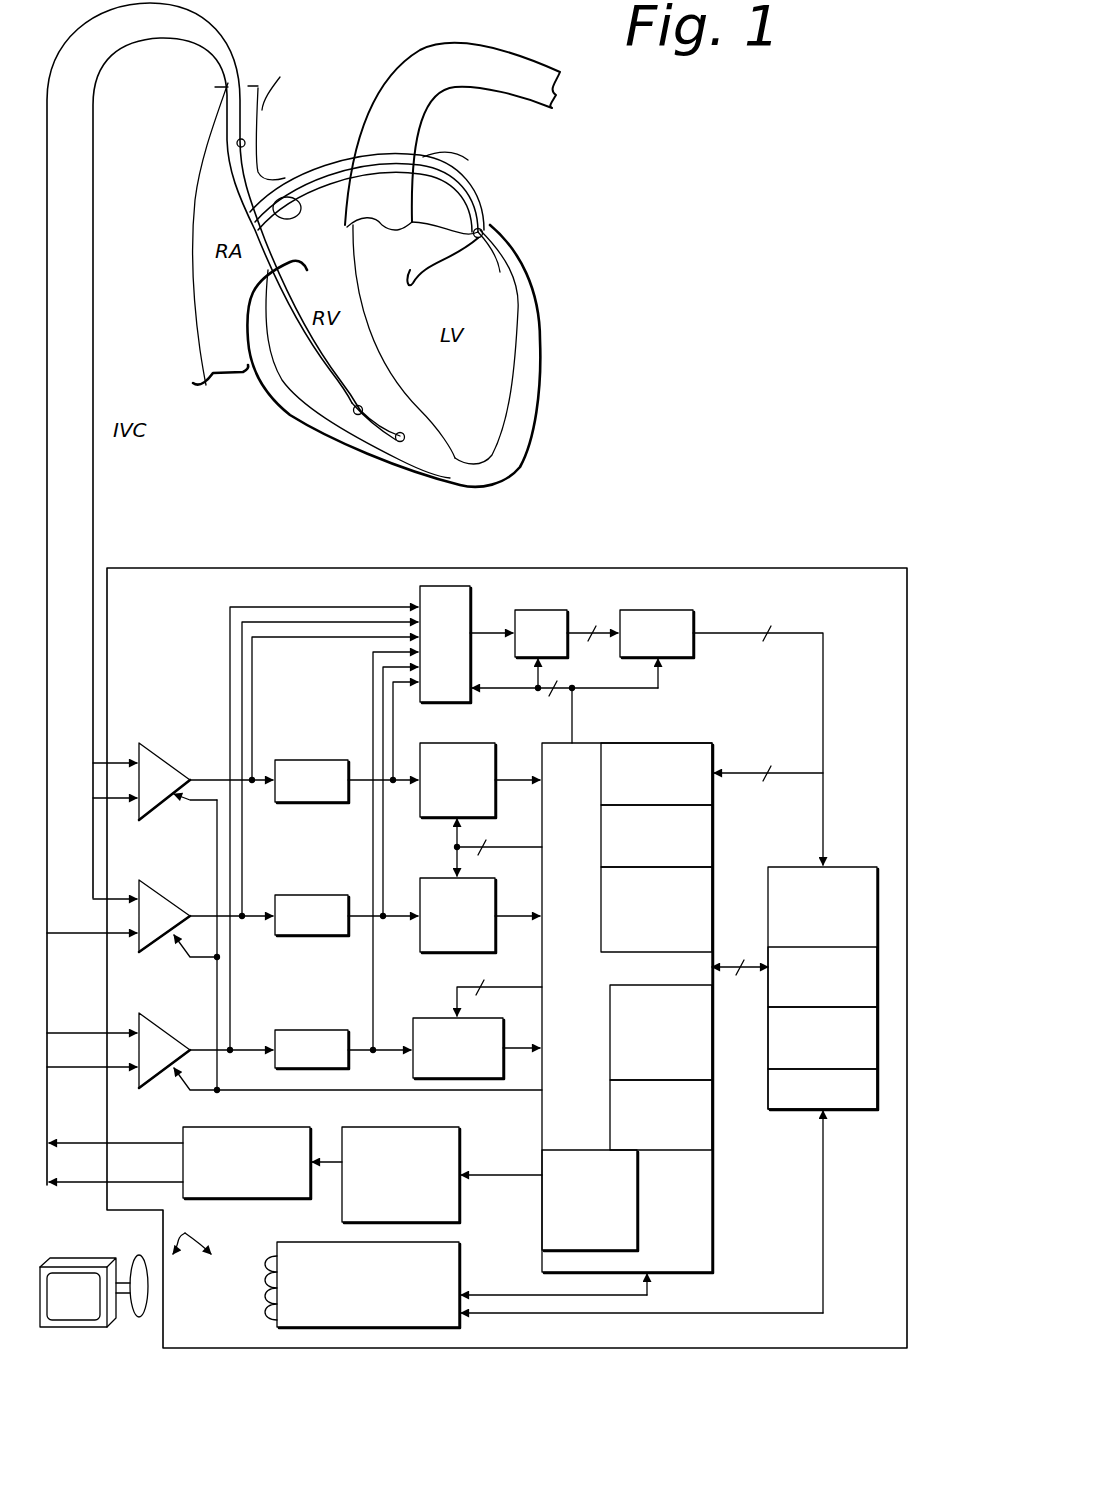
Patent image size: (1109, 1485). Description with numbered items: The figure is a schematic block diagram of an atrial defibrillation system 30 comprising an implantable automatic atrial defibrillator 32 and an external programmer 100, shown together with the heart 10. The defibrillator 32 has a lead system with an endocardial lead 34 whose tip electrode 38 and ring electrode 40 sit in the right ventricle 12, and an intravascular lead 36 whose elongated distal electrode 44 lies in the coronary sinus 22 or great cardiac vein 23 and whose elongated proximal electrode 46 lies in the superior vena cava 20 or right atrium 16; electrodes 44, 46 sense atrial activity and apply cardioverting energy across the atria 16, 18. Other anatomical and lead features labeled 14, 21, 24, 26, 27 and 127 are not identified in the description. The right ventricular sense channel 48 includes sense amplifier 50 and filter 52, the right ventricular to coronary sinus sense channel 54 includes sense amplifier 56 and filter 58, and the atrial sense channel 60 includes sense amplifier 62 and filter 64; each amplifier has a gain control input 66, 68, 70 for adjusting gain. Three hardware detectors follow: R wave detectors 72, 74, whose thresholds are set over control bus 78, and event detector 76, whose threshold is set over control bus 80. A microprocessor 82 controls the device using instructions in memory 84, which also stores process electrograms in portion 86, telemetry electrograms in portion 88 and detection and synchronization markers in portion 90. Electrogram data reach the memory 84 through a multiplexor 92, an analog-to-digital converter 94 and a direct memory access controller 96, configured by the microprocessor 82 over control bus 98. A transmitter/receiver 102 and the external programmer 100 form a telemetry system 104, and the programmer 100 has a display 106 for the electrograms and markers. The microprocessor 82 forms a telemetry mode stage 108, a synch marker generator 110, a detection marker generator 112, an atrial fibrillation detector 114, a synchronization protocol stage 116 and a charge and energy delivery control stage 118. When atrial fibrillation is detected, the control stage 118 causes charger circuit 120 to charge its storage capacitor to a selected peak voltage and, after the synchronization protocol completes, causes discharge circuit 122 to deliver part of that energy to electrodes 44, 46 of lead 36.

The heart 10 is at (796, 128).
The right ventricle 12 is at (302, 350).
The left ventricle wall 14 is at (485, 428).
The right atrium 16 is at (218, 200).
The left atrium 18 is at (423, 157).
The superior vena cava 20 is at (268, 103).
The left atrium 21 is at (383, 150).
The coronary sinus 22 is at (332, 168).
The great cardiac vein 23 is at (482, 229).
The proximal electrode of second lead 24 is at (310, 172).
The epicardial electrode 26 is at (510, 240).
The right atrium lower wall 27 is at (222, 331).
The atrial defibrillation system 30 is at (791, 503).
The implantable automatic atrial defibrillator 32 is at (618, 566).
The endocardial lead 34 is at (93, 520).
The intravascular lead 36 is at (47, 478).
The tip electrode 38 is at (400, 442).
The ring electrode 40 is at (358, 414).
The elongated distal electrode 44 is at (500, 272).
The elongated proximal electrode 46 is at (237, 143).
The right ventricular sense channel 48 is at (179, 753).
The sense amplifier 50 is at (150, 808).
The filter 52 is at (323, 760).
The right ventricular to coronary sinus sense channel 54 is at (178, 890).
The sense amplifier 56 is at (150, 944).
The filter 58 is at (323, 895).
The atrial sense channel 60 is at (178, 1022).
The sense amplifier 62 is at (150, 1081).
The filter 64 is at (323, 1030).
The gain control input 66 is at (172, 797).
The gain control input 68 is at (172, 935).
The gain control input 70 is at (172, 1070).
The R wave detector 72 is at (430, 745).
The R wave detector 74 is at (430, 878).
The event detector 76 is at (430, 1018).
The control bus 78 is at (508, 822).
The control bus 80 is at (500, 987).
The microprocessor 82 is at (576, 988).
The memory 84 is at (832, 918).
The process electrogram portion 86 is at (768, 990).
The telemetry electrogram portion 88 is at (768, 1040).
The marker portion 90 is at (768, 1090).
The multiplexor 92 is at (470, 608).
The analog-to-digital converter 94 is at (529, 610).
The direct memory access controller 96 is at (640, 610).
The control bus 98 is at (505, 692).
The external programmer 100 is at (70, 1262).
The transmitter/receiver 102 is at (459, 1272).
The telemetry system 104 is at (185, 1233).
The display 106 is at (78, 1306).
The telemetry mode stage 108 is at (610, 1118).
The synch marker generator 110 is at (610, 1058).
The detection marker generator 112 is at (601, 910).
The atrial fibrillation detector 114 is at (601, 855).
The synchronization protocol stage 116 is at (601, 790).
The charge and energy delivery control stage 118 is at (638, 1196).
The charger circuit 120 is at (354, 1127).
The discharge circuit 122 is at (243, 1127).
The control line 127 is at (542, 1118).